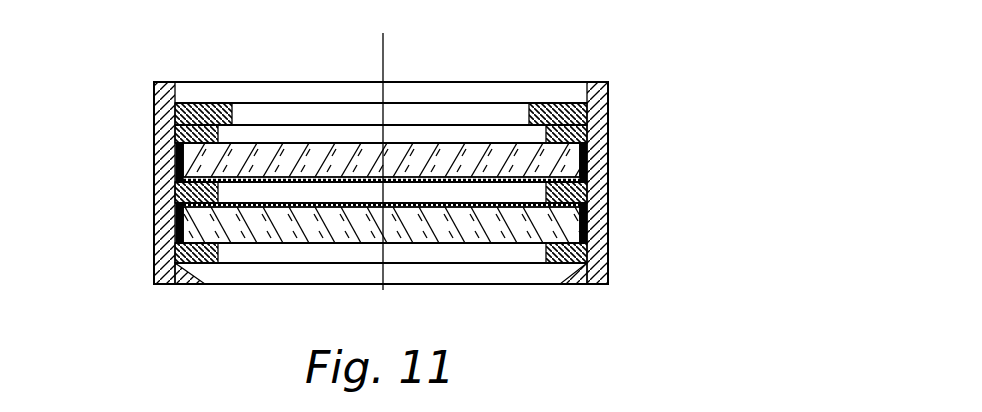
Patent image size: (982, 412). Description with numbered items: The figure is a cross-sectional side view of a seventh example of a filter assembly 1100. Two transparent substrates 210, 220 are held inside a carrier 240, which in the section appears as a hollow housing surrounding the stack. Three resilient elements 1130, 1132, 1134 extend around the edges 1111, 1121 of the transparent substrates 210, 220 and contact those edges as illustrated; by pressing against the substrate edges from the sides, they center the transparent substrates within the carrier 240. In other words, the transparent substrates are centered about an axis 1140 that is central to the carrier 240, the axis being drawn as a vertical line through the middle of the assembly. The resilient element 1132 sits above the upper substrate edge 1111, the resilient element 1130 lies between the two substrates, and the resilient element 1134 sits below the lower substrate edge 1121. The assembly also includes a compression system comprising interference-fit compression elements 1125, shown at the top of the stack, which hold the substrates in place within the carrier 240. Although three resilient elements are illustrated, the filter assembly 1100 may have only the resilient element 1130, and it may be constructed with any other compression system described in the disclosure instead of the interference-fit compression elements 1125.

The filter assembly 1100 is at (399, 145).
The axis 1140 is at (383, 52).
The interference-fit compression element 1125 is at (557, 103).
The resilient element 1132 is at (185, 134).
The edge 1111 is at (178, 162).
The resilient element 1130 is at (178, 188).
The edge 1121 is at (178, 218).
The resilient element 1134 is at (178, 255).
The carrier 240 is at (616, 149).
The transparent substrate 210 is at (558, 170).
The transparent substrate 220 is at (558, 235).